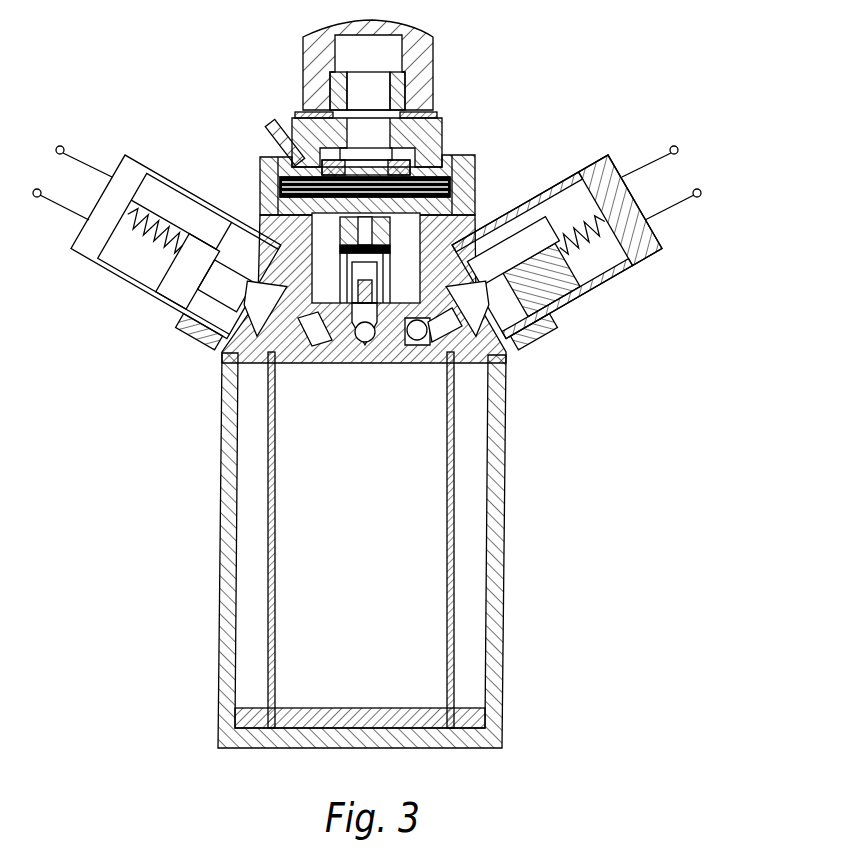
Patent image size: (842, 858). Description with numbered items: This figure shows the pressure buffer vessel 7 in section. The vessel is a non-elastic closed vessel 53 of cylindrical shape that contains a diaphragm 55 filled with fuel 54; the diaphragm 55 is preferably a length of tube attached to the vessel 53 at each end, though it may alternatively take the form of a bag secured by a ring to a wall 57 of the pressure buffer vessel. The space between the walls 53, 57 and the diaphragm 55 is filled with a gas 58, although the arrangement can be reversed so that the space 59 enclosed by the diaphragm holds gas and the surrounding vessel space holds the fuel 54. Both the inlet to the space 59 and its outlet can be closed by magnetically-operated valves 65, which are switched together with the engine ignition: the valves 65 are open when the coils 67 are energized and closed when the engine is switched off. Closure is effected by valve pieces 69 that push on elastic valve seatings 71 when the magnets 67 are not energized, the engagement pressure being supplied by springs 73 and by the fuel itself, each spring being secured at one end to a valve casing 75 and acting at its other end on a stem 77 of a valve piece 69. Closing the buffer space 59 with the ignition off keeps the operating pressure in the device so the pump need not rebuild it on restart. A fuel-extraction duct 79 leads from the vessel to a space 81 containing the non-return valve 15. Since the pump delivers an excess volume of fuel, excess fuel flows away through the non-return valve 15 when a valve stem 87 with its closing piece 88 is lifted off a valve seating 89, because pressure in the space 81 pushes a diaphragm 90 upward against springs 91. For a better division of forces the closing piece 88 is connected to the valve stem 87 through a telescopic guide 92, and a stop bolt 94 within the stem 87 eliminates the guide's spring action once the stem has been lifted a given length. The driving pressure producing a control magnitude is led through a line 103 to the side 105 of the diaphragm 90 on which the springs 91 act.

The pressure buffer vessel 7 is at (470, 412).
The non-return valve 15 is at (455, 165).
The non-elastic closed vessel 53 is at (490, 455).
The fuel 54 is at (418, 560).
The diaphragm 55 is at (453, 645).
The wall of the pressure buffer vessel 57 is at (508, 348).
The gas 58 is at (470, 503).
The space enclosed by the diaphragm 59 is at (425, 385).
The magnetically-operated valves 65 is at (92, 242).
The coils 67 is at (577, 197).
The valve pieces 69 is at (507, 313).
The elastic valve seatings 71 is at (528, 325).
The springs 73 is at (628, 198).
The valve casing 75 is at (647, 245).
The stem of a valve piece 77 is at (545, 272).
The fuel-extraction duct 79 is at (292, 208).
The space 81 is at (458, 208).
The valve stem 87 is at (270, 173).
The closing piece 88 is at (278, 185).
The valve seating 89 is at (420, 235).
The diaphragm 90 is at (415, 168).
The springs 91 is at (403, 155).
The telescopic guide 92 is at (440, 230).
The stop bolt 94 is at (352, 258).
The line 103 is at (268, 138).
The side of the diaphragm 105 is at (298, 128).